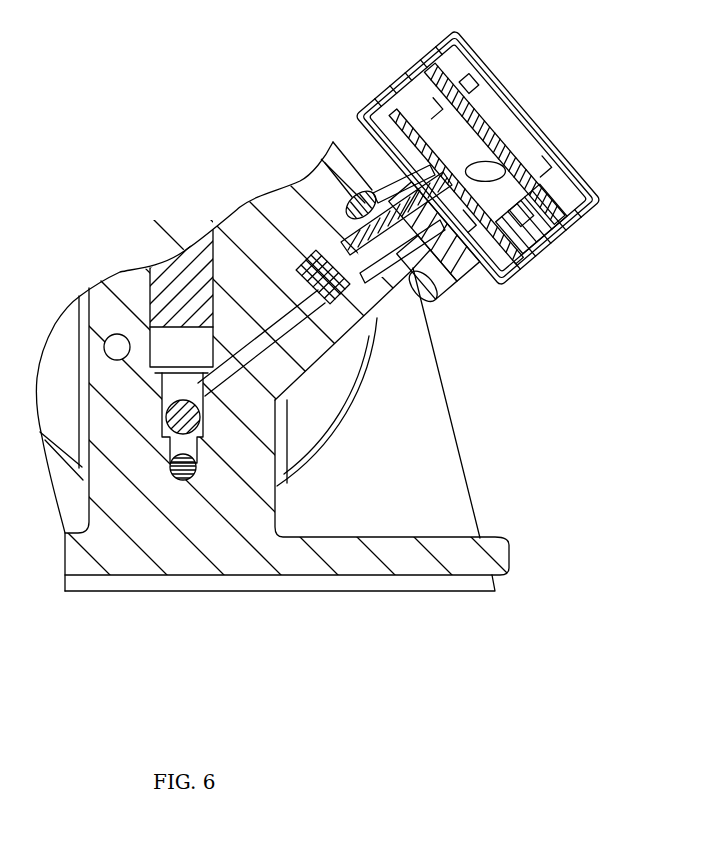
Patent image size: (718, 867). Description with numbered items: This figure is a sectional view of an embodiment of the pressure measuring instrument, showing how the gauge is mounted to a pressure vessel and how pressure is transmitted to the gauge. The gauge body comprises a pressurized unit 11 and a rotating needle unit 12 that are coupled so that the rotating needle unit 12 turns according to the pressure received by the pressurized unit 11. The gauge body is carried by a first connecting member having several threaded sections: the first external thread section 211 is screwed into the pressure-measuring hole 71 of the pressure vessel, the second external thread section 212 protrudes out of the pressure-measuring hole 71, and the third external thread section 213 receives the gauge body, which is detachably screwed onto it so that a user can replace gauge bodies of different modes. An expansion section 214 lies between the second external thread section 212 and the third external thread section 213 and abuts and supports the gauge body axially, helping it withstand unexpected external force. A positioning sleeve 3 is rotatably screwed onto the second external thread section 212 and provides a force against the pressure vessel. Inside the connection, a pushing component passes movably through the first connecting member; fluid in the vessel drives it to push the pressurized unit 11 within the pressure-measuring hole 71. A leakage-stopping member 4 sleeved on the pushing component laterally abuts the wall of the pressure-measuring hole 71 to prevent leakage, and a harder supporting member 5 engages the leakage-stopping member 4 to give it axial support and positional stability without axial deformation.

The positioning sleeve 3 is at (352, 236).
The leakage-stopping member 4 is at (243, 230).
The supporting member 5 is at (303, 247).
The pressurized unit 11 is at (467, 103).
The rotating needle unit 12 is at (553, 145).
The pressure-measuring hole 71 is at (380, 374).
The first external thread section 211 is at (420, 290).
The second external thread section 212 is at (427, 263).
The third external thread section 213 is at (517, 239).
The expansion section 214 is at (372, 160).